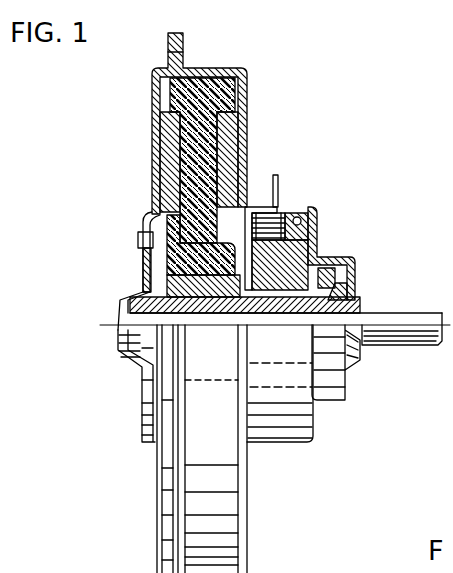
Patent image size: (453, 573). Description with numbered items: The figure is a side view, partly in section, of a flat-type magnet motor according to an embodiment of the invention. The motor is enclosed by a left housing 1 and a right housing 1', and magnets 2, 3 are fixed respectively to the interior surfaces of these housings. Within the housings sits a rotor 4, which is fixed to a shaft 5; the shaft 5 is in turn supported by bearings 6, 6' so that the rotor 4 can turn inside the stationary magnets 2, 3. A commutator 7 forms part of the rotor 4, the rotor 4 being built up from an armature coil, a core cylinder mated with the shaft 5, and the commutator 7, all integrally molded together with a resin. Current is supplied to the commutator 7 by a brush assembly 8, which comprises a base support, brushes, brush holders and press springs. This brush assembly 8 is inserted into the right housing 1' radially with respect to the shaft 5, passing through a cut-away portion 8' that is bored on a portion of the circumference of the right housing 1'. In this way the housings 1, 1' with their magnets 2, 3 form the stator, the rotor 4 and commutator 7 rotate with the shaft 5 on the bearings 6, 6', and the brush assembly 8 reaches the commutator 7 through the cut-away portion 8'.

The left housing 1 is at (180, 162).
The right housing 1' is at (301, 330).
The magnet 2 is at (160, 167).
The magnet 3 is at (245, 152).
The rotor 4 is at (211, 68).
The shaft 5 is at (426, 311).
The bearing 6 is at (133, 337).
The bearing 6' is at (357, 279).
The commutator 7 is at (272, 313).
The brush assembly 8 is at (280, 225).
The cut-away portion 8' is at (315, 217).